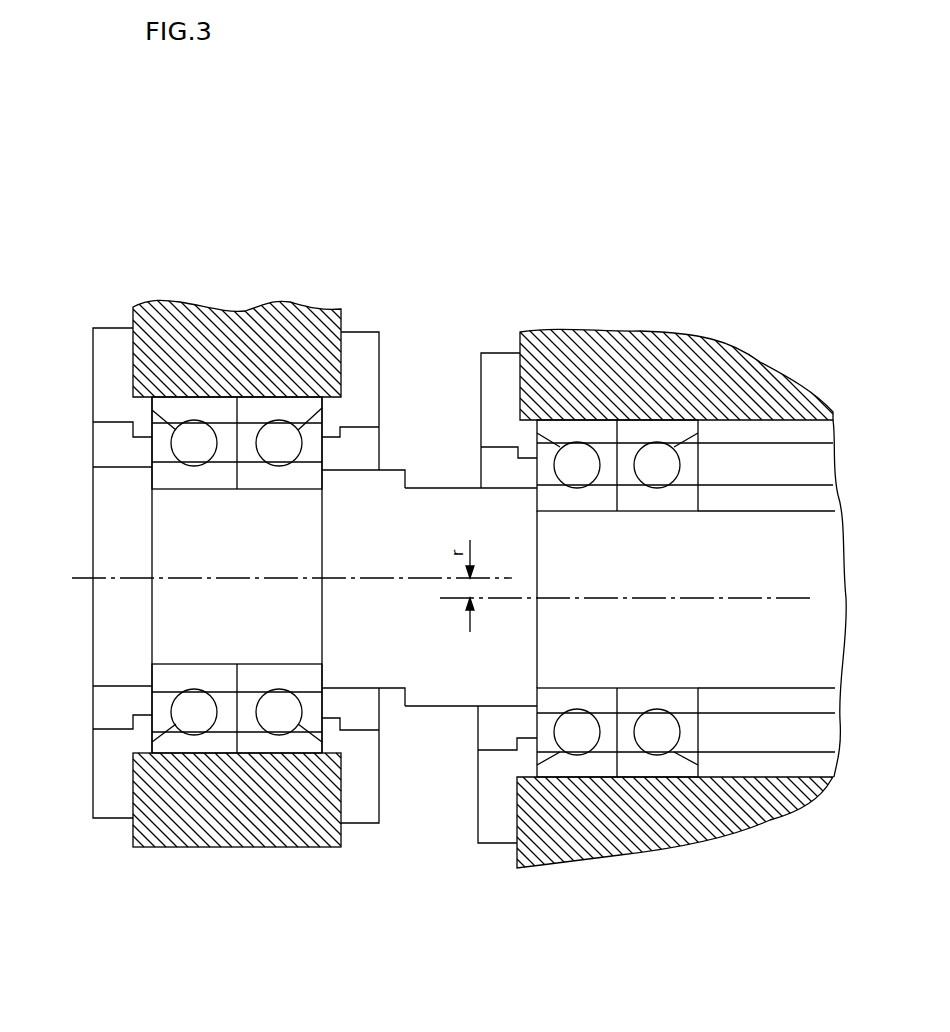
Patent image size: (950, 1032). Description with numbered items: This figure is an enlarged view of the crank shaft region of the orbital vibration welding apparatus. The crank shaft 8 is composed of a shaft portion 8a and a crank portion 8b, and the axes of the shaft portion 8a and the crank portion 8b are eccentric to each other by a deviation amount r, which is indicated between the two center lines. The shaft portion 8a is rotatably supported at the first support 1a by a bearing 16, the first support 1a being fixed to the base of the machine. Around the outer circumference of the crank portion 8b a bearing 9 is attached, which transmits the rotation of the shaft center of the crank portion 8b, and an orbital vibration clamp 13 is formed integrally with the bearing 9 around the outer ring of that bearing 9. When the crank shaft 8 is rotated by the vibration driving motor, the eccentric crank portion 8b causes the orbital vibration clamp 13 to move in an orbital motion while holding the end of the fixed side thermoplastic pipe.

The orbital vibration clamp 13 is at (273, 313).
The bearing 9 is at (175, 436).
The first support 1a is at (648, 333).
The bearing 16 is at (679, 467).
The crank shaft 8 is at (437, 708).
The shaft portion 8a is at (440, 486).
The crank portion 8b is at (405, 466).